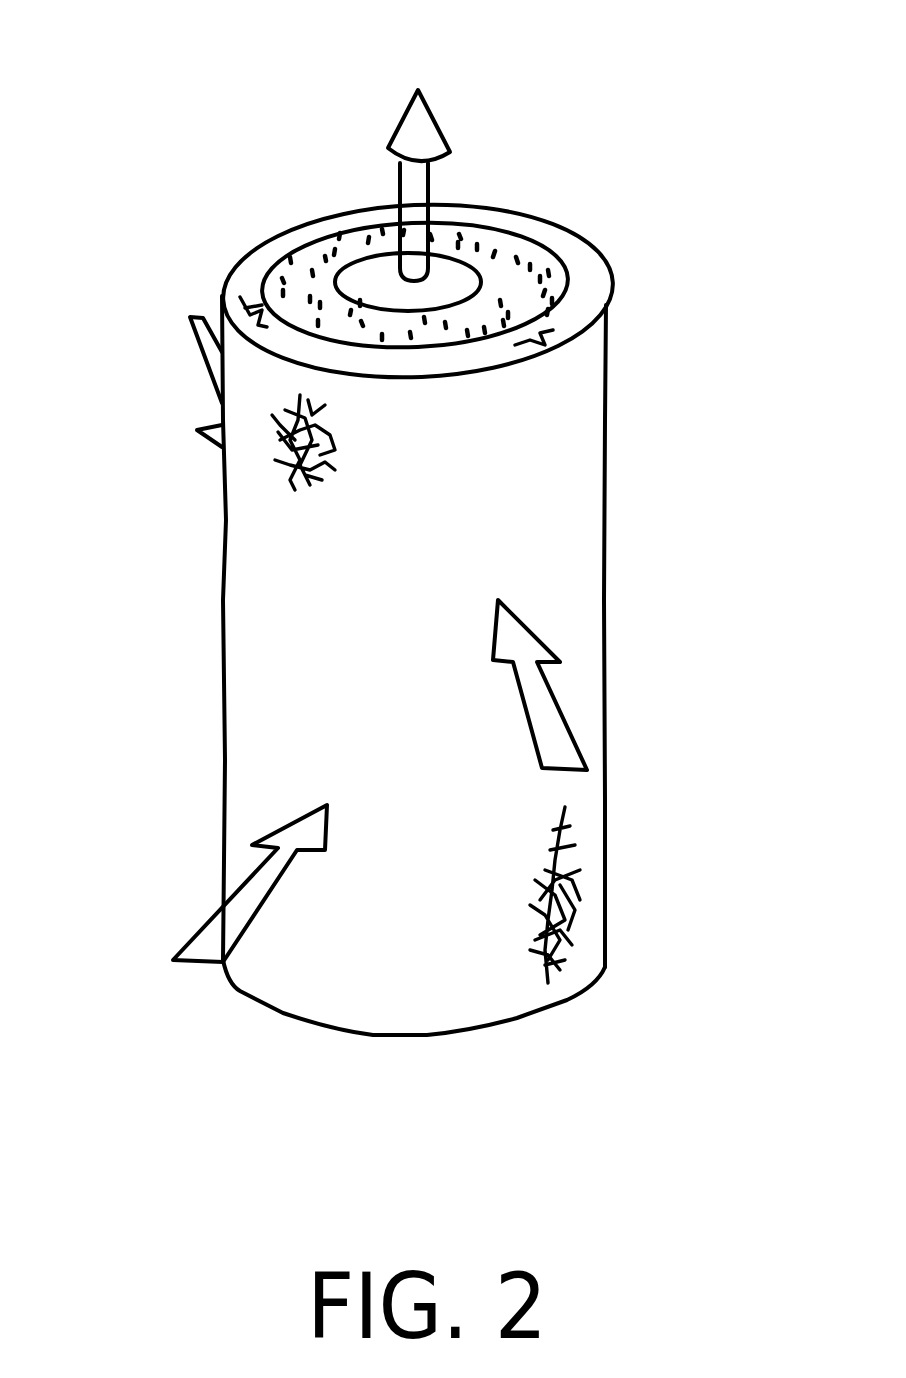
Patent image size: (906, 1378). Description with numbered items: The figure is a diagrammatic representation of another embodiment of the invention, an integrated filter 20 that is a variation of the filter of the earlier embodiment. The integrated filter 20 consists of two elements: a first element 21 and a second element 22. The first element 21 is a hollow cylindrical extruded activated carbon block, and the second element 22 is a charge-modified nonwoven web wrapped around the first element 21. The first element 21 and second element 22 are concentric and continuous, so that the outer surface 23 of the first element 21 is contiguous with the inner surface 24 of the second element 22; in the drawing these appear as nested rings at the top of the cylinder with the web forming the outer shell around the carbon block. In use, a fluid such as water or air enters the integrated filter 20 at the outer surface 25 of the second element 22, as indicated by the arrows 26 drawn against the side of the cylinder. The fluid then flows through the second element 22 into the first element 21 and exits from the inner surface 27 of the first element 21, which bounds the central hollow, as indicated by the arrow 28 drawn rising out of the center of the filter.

The integrated filter 20 is at (425, 518).
The first element 21 is at (533, 292).
The second element 22 is at (577, 302).
The outer surface of the first element 23 is at (515, 237).
The inner surface of the second element 24 is at (265, 278).
The outer surface of the second element 25 is at (512, 497).
The arrows 26 is at (213, 347).
The inner surface of the first element 27 is at (355, 278).
The arrow 28 is at (415, 133).